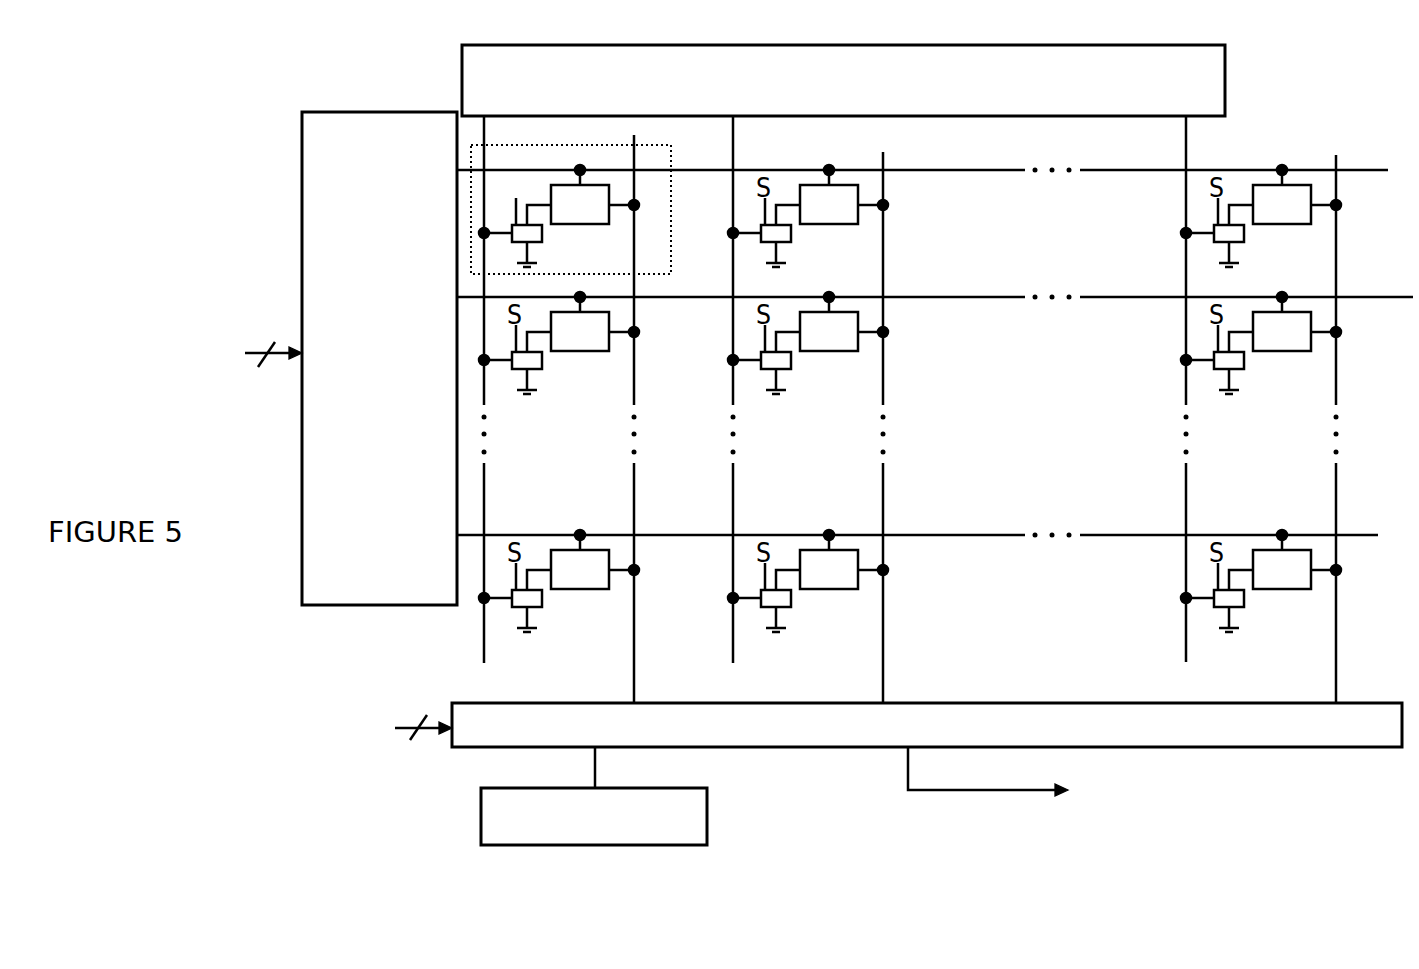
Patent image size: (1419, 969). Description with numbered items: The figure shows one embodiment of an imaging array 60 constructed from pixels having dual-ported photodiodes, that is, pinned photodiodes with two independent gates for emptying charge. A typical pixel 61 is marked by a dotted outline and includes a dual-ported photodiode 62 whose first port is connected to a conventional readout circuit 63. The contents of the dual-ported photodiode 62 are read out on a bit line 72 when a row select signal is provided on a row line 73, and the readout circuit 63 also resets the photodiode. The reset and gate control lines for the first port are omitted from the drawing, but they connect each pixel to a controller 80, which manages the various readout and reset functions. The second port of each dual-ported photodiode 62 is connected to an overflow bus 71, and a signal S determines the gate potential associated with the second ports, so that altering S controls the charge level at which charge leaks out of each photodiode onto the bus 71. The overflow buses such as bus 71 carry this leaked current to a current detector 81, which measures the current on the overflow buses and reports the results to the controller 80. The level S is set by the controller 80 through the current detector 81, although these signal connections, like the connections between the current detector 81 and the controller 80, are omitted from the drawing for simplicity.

The imaging array 60 is at (221, 103).
The pixel 61 is at (593, 209).
The dual-ported photodiode 62 is at (534, 242).
The readout circuit 63 is at (591, 218).
The bus 71 is at (484, 468).
The bit line 72 is at (634, 483).
The row line 73 is at (940, 172).
The controller 80 is at (707, 815).
The current detector 81 is at (1218, 73).